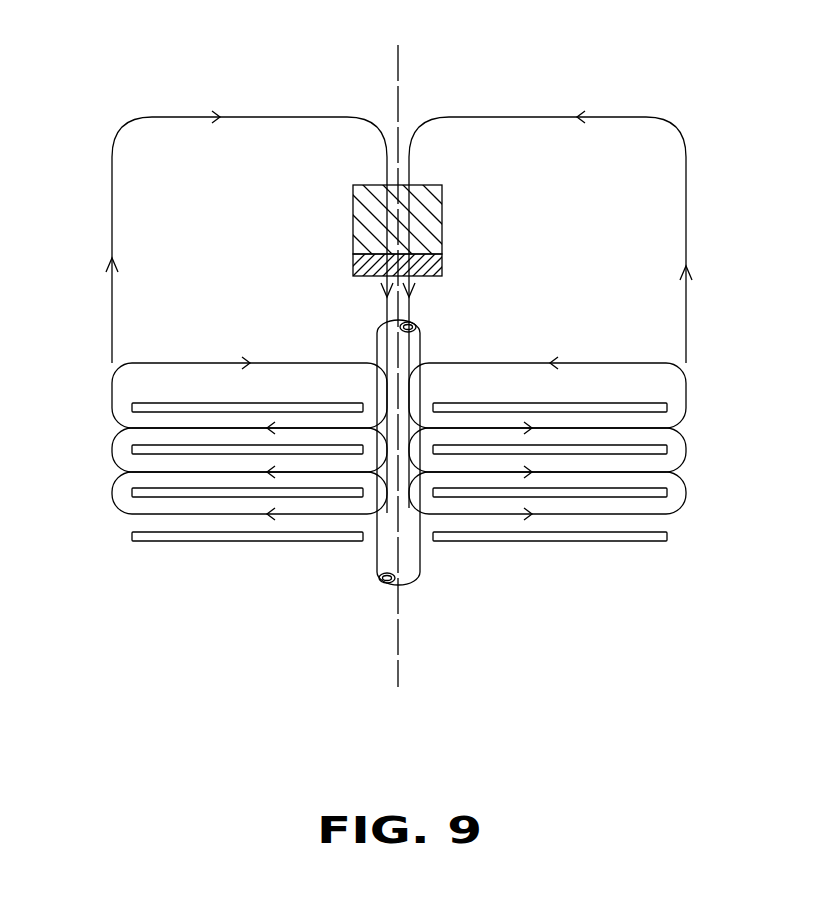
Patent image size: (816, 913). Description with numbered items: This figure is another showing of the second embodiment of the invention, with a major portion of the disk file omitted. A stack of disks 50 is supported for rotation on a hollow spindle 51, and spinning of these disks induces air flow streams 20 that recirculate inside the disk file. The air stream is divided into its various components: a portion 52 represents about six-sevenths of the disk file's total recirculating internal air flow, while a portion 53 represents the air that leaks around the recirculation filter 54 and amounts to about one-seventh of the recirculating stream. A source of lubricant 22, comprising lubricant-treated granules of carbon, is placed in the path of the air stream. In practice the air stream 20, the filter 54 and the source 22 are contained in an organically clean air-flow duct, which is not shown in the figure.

The air flow portion 52 is at (160, 117).
The air flow streams 20 is at (333, 120).
The source of lubricant 22 is at (428, 222).
The recirculation filter 54 is at (410, 263).
The leakage air stream portion 53 is at (178, 363).
The stack of disks 50 is at (692, 406).
The hollow spindle 51 is at (378, 565).